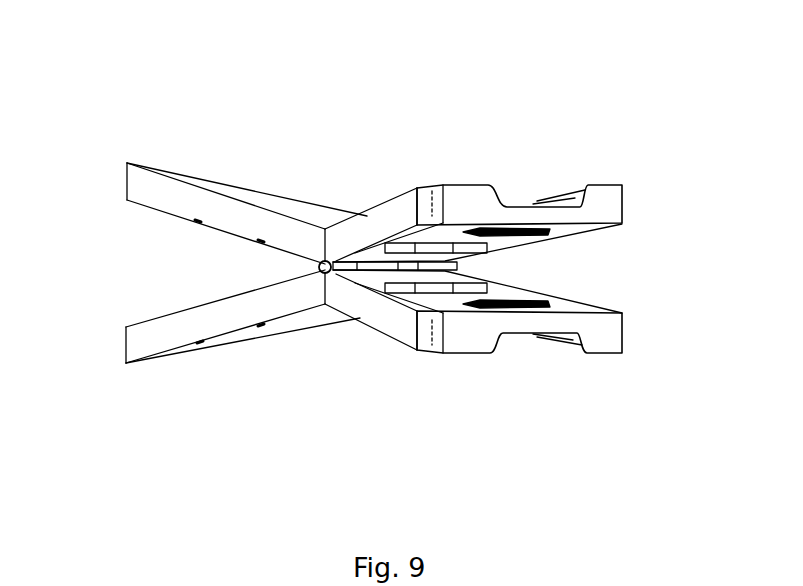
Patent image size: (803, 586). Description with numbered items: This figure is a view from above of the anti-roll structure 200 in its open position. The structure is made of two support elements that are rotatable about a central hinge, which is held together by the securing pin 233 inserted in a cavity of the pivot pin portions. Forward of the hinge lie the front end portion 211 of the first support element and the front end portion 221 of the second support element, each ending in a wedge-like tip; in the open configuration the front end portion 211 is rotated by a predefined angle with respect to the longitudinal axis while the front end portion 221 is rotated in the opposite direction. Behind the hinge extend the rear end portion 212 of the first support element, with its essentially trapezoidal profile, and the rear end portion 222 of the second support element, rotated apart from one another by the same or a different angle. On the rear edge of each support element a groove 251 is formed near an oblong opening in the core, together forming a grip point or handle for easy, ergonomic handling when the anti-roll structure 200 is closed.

The anti-roll structure 200 is at (125, 16).
The front end portion of the first support element 211 is at (123, 348).
The front end portion of the second support element 221 is at (113, 182).
The rear end portion of the first support element 212 is at (403, 198).
The rear end portion of the second support element 222 is at (372, 313).
The securing pin 233 is at (321, 273).
The groove 251 is at (523, 198).